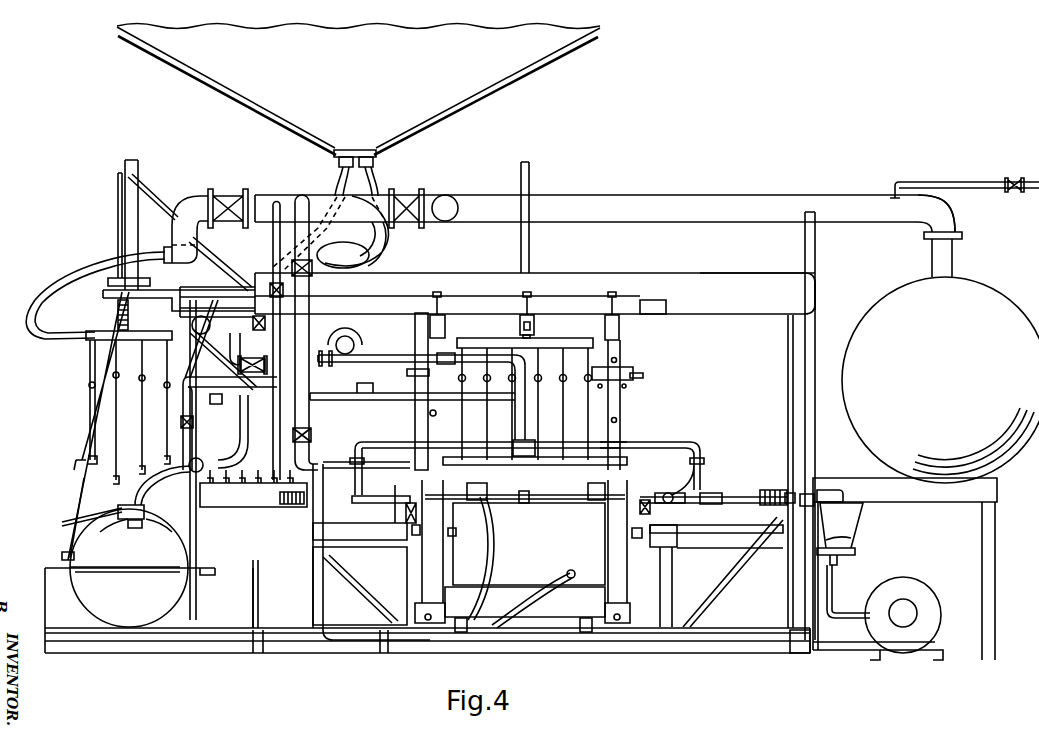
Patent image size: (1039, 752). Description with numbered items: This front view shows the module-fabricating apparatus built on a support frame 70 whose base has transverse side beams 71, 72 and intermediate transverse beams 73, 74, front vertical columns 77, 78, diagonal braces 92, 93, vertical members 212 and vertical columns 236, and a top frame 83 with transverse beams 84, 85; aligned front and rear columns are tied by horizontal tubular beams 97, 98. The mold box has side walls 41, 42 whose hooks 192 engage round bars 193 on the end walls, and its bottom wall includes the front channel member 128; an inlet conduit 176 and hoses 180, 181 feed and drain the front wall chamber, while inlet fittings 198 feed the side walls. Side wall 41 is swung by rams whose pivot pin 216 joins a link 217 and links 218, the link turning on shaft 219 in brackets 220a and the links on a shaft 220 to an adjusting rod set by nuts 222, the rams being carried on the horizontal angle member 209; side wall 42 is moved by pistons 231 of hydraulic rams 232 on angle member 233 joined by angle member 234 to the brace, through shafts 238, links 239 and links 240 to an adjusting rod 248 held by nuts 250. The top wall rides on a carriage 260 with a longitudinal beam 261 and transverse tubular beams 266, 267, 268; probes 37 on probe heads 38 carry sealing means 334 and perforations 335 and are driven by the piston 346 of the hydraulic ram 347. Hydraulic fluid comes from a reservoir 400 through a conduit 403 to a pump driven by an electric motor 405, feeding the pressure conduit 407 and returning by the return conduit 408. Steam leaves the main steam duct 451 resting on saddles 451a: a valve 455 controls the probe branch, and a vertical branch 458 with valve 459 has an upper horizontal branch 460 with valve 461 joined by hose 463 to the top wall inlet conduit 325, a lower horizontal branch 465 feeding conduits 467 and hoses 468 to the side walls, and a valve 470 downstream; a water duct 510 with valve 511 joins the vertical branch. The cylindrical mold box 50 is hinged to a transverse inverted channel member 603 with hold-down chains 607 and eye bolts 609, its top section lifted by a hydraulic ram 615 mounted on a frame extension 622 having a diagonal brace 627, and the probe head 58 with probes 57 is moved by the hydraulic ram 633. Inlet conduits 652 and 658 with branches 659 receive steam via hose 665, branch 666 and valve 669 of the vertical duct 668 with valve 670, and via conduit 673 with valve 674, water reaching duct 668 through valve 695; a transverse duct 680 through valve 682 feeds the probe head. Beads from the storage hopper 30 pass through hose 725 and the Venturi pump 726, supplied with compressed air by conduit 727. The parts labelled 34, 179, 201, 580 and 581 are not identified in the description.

The storage hopper 30 is at (533, 61).
The flexible conduit 34 is at (312, 238).
The probes 37 is at (588, 413).
The probe heads 38 is at (480, 338).
The side wall 41 is at (440, 580).
The side wall 42 is at (620, 578).
The cylindrical mold box 50 is at (110, 629).
The probes 57 is at (90, 365).
The probe head 58 is at (88, 337).
The support frame 70 is at (828, 262).
The side beam 71 is at (253, 645).
The side beam 72 is at (796, 651).
The intermediate transverse beam 73 is at (455, 645).
The intermediate transverse beam 74 is at (618, 648).
The front vertical column 77 is at (253, 605).
The front vertical column 78 is at (813, 447).
The top frame 83 is at (746, 269).
The transverse side beam 84 is at (255, 298).
The transverse side beam 85 is at (816, 293).
The diagonal brace 92 is at (350, 601).
The diagonal brace 93 is at (730, 595).
The horizontal tubular beam 97 is at (300, 524).
The horizontal tubular beam 98 is at (790, 492).
The front channel member 128 is at (540, 642).
The inlet conduit 176 is at (490, 537).
The connector 179 is at (568, 570).
The flexible conduit 180 is at (486, 572).
The flexible conduit 181 is at (545, 582).
The hooks 192 is at (452, 497).
The round bars 193 is at (478, 485).
The inlet conduits 198 is at (414, 514).
The manifold 201 is at (265, 501).
The horizontal angle member 209 is at (350, 549).
The vertical members 212 is at (383, 646).
The pivot pin 216 is at (393, 486).
The link 217 is at (418, 526).
The pair of links 218 is at (376, 505).
The shaft 219 is at (432, 488).
The bolt or shaft 220 is at (360, 465).
The brackets 220a is at (452, 534).
The nuts 222 is at (262, 513).
The pistons 231 is at (708, 552).
The hydraulic rams 232 is at (663, 536).
The horizontal transverse angle member 233 is at (636, 536).
The horizontal angle member 234 is at (700, 551).
The vertical columns 236 is at (672, 597).
The shafts 238 is at (690, 497).
The links 239 is at (668, 497).
The pair of links 240 is at (708, 504).
The adjusting rod 248 is at (755, 496).
The nuts 250 is at (808, 496).
The carriage 260 is at (675, 309).
The longitudinal beam 261 is at (650, 300).
The transverse tubular beam 266 is at (441, 325).
The intermediate transverse tubular beam 267 is at (523, 312).
The transverse tubular beam 268 is at (611, 300).
The inlet conduit 325 is at (518, 456).
The sealing means 334 is at (624, 386).
The perforations 335 is at (634, 396).
The piston 346 is at (534, 324).
The hydraulic ram 347 is at (527, 247).
The reservoir 400 is at (855, 526).
The conduit 403 is at (836, 580).
The electric motor 405 is at (910, 580).
The pressure conduit 407 is at (840, 651).
The return conduit 408 is at (858, 541).
The main steam duct 451 is at (265, 207).
The saddles 451a is at (815, 235).
The valve 455 is at (408, 198).
The vertical branch 458 is at (309, 291).
The valve 459 is at (343, 254).
The upper horizontal branch 460 is at (392, 356).
The valve 461 is at (352, 337).
The flexible conduit 463 is at (407, 370).
The lower horizontal branch 465 is at (385, 400).
The conduits 467 is at (388, 448).
The flexible conduits 468 is at (357, 460).
The valve 470 is at (312, 436).
The water duct 510 is at (212, 345).
The valve 511 is at (281, 320).
The valve 580 is at (1018, 185).
The pipe 581 is at (958, 186).
The transverse inverted channel member 603 is at (200, 576).
The hold-down chains 607 is at (75, 530).
The eye bolts 609 is at (66, 556).
The hydraulic ram 615 is at (75, 450).
The frame extension 622 is at (98, 300).
The diagonal brace 627 is at (176, 322).
The hydraulic ram 633 is at (140, 165).
The inlet conduit 652 is at (159, 583).
The inlet conduit 658 is at (118, 508).
The branches 659 is at (126, 525).
The flexible conduit 665 is at (205, 466).
The branch 666 is at (247, 410).
The vertical duct 668 is at (253, 323).
The valve 669 is at (194, 419).
The valve 670 is at (230, 268).
The conduit 673 is at (190, 542).
The valve 674 is at (193, 428).
The transverse duct 680 is at (190, 208).
The valve 682 is at (228, 196).
The valve 695 is at (212, 368).
The flexible conduit 725 is at (145, 508).
The Venturi pump 726 is at (135, 533).
The flexible conduit 727 is at (64, 522).